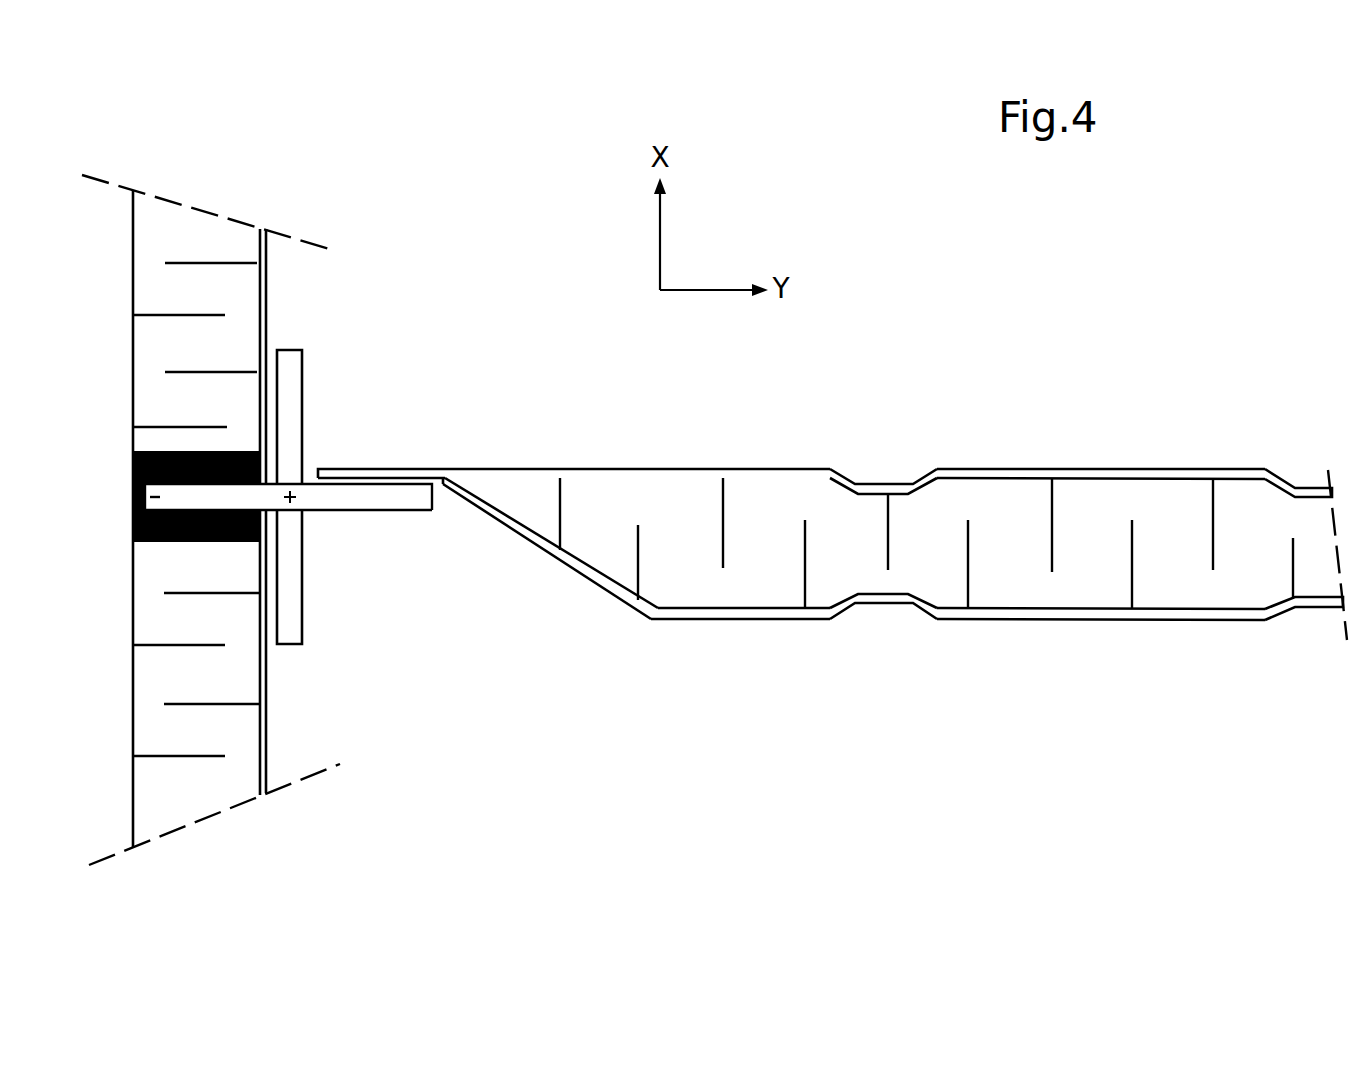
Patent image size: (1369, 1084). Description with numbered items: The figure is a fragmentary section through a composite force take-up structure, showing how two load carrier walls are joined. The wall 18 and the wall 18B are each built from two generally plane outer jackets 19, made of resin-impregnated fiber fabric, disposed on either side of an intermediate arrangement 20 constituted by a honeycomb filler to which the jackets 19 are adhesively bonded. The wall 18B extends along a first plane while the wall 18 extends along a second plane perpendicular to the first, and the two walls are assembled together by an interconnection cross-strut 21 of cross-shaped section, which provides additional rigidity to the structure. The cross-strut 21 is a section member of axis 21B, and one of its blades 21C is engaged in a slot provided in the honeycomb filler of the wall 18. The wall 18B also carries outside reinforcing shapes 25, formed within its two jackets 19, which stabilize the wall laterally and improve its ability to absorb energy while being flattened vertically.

The load carrier wall 18 is at (228, 820).
The wall 18B is at (524, 642).
The outer jackets 19 is at (133, 277).
The intermediate arrangement 20 is at (180, 356).
The interconnection cross-strut 21 is at (337, 415).
The axis 21B is at (293, 503).
The blade 21C is at (133, 496).
The reinforcing shapes 25 is at (890, 474).